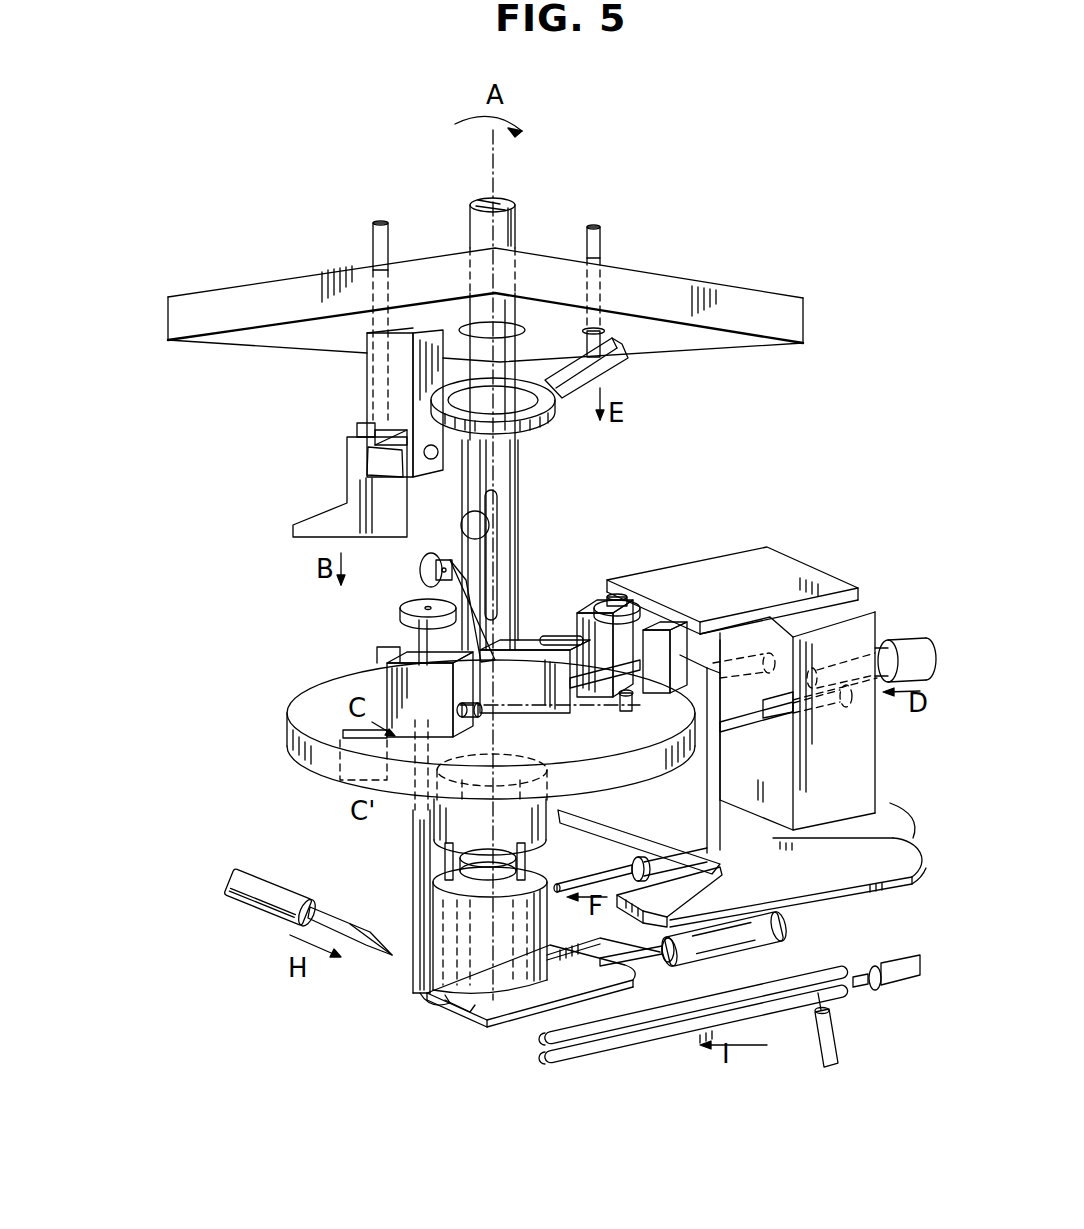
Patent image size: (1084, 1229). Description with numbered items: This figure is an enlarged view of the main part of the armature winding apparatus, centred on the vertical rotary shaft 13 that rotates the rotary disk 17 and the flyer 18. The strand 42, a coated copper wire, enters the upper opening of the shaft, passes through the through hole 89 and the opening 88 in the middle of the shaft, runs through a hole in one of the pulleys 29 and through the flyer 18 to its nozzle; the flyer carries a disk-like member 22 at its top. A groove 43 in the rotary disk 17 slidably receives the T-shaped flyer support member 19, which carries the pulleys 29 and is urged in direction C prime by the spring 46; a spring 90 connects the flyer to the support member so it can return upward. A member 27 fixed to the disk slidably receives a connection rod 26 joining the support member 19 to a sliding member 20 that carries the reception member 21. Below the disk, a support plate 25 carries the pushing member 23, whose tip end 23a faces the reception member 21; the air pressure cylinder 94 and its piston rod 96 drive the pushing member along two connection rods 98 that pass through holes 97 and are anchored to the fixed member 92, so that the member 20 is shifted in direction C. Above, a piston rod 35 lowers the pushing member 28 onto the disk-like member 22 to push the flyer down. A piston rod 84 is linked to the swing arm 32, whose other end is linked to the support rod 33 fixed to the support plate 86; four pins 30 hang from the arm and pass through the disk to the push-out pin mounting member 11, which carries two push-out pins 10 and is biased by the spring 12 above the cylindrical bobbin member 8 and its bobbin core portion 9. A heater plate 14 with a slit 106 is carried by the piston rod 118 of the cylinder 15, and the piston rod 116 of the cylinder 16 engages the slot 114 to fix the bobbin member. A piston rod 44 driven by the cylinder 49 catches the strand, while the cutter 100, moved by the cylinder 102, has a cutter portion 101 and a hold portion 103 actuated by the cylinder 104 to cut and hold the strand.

The bobbin member 8 is at (520, 1030).
The bobbin core portion 9 is at (475, 1010).
The push-out pins 10 is at (440, 895).
The push-out pin mounting member 11 is at (440, 842).
The spring 12 is at (520, 856).
The rotary shaft 13 is at (515, 340).
The heater plate 14 is at (590, 965).
The air pressure cylinder 15 is at (785, 926).
The cylinder 16 is at (690, 875).
The rotary disk 17 is at (290, 708).
The flyer 18 is at (413, 985).
The flyer support member 19 is at (392, 660).
The member 20 is at (580, 615).
The reception member 21 is at (608, 598).
The disk-like member 22 is at (415, 605).
The pushing member 23 is at (756, 560).
The tip end 23a is at (660, 615).
The support plate 25 is at (872, 862).
The connection rod 26 is at (628, 705).
The member 27 is at (545, 650).
The pushing member 28 is at (330, 515).
The pulleys 29 is at (462, 528).
The pins 30 is at (488, 457).
The swing arm 32 is at (618, 360).
The support rod 33 is at (395, 382).
The piston rod 35 is at (373, 240).
The strand 42 is at (492, 156).
The groove 43 is at (345, 760).
The piston rod 44 is at (332, 915).
The spring 46 is at (560, 710).
The cylinder 49 is at (288, 895).
The piston rod 84 is at (600, 235).
The support plate 86 is at (262, 290).
The opening 88 is at (497, 545).
The through hole 89 is at (470, 225).
The spring 90 is at (437, 812).
The fixed member 92 is at (720, 676).
The air pressure cylinder 94 is at (906, 648).
The piston rod 96 is at (883, 645).
The holes 97 is at (860, 725).
The connection rods 98 is at (745, 722).
The cutter 100 is at (787, 1013).
The cutter portion 101 is at (550, 1046).
The cylinder 102 is at (884, 966).
The hold portion 103 is at (556, 1062).
The cylinder 104 is at (836, 1036).
The slit 106 is at (433, 1010).
The slot 114 is at (574, 957).
The piston rod 116 is at (590, 880).
The piston rod 118 is at (642, 956).